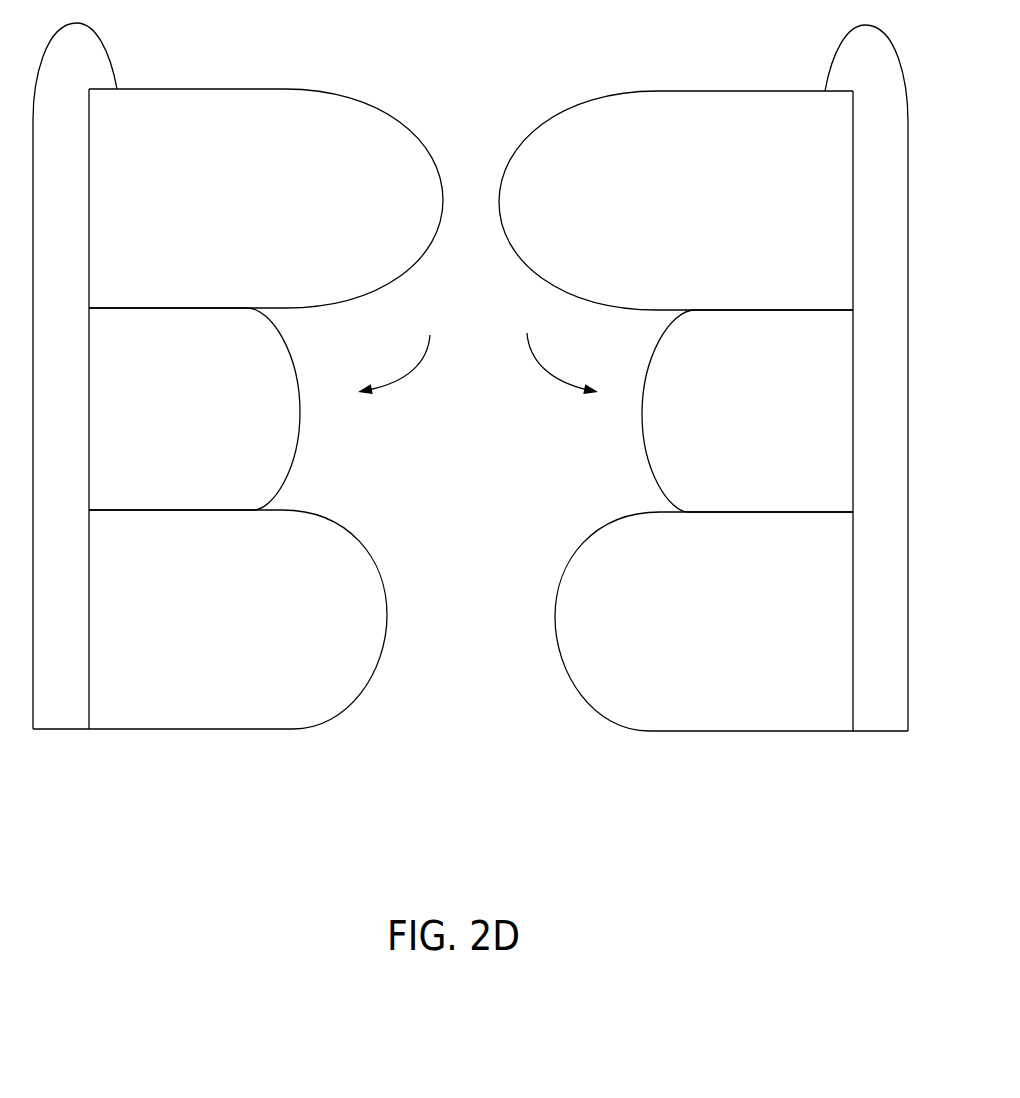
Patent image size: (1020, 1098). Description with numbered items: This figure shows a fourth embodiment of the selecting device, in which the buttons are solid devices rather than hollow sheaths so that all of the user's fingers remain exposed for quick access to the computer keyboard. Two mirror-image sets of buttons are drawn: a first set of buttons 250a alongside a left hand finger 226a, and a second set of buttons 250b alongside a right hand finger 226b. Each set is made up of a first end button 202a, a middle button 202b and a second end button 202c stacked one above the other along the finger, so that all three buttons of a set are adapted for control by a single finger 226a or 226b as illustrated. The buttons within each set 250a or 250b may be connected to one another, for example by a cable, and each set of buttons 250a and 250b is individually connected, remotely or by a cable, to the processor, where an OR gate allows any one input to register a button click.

The first end button 202a is at (203, 168).
The middle button 202b is at (181, 380).
The second end button 202c is at (211, 593).
The left hand finger 226a is at (52, 729).
The right hand finger 226b is at (877, 732).
The first set of buttons 250a is at (413, 348).
The second set of buttons 250b is at (552, 347).